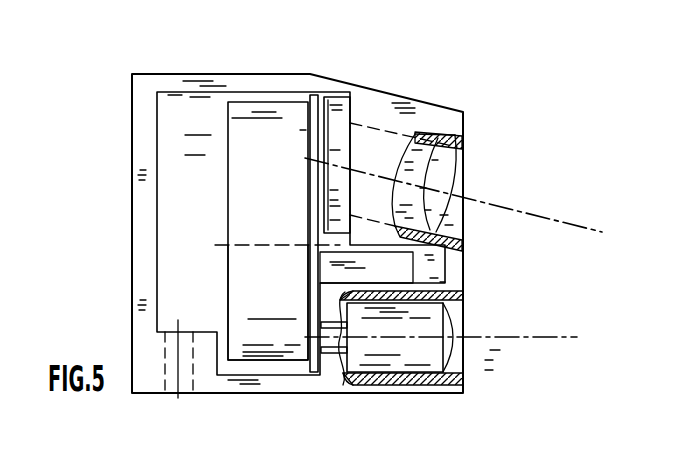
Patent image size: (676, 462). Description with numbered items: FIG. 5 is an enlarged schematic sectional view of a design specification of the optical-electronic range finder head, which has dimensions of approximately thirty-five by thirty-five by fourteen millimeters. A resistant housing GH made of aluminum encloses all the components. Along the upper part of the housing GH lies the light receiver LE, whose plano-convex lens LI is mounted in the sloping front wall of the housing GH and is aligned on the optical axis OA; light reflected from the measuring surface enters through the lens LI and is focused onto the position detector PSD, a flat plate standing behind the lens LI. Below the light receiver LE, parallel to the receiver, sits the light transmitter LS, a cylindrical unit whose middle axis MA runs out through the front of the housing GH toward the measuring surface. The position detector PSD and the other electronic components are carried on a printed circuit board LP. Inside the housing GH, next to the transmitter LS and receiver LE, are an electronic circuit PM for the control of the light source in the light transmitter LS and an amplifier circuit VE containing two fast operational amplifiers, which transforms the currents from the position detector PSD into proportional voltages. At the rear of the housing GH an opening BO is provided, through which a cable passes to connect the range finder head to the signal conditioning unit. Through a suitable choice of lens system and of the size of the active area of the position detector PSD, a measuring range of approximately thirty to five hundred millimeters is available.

The housing GH is at (143, 92).
The amplifier circuit VE is at (246, 231).
The electronic circuit PM is at (277, 302).
The printed circuit board LP is at (316, 372).
The position detector PSD is at (335, 130).
The light receiver LE is at (386, 148).
The plano-convex lens LI is at (445, 163).
The optical axis OA is at (598, 232).
The light transmitter LS is at (400, 357).
The middle axis MA is at (577, 337).
The opening BO is at (175, 378).